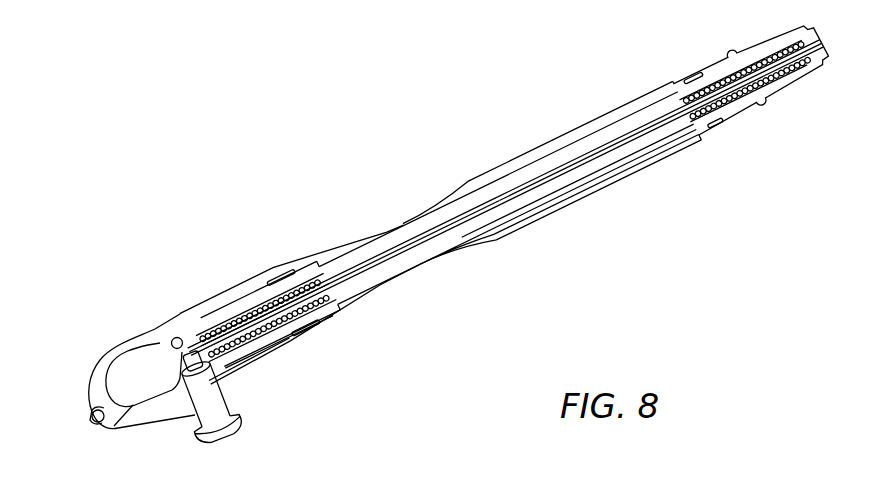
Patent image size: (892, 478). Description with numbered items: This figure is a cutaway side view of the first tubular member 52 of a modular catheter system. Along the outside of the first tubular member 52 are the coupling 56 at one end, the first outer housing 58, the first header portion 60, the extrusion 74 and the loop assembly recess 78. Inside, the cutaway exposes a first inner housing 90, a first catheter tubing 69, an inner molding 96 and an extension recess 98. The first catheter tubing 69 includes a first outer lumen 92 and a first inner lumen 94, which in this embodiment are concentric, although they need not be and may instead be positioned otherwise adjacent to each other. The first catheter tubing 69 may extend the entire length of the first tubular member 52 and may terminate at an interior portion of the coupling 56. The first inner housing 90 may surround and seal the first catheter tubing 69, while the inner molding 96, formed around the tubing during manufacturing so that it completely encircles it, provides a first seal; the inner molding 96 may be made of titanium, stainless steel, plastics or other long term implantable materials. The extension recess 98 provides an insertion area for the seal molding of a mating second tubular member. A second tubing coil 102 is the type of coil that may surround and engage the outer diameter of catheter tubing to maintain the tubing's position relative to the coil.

The first tubular member 52 is at (361, 140).
The coupling 56 is at (757, 45).
The first outer housing 58 is at (545, 150).
The first header portion 60 is at (273, 267).
The first catheter tubing 69 is at (387, 250).
The extrusion 74 is at (247, 418).
The loop assembly recess 78 is at (162, 325).
The first inner housing 90 is at (600, 140).
The first outer lumen 92 is at (243, 362).
The first inner lumen 94 is at (207, 330).
The inner molding 96 is at (273, 340).
The extension recess 98 is at (230, 440).
The second tubing coil 102 is at (310, 280).